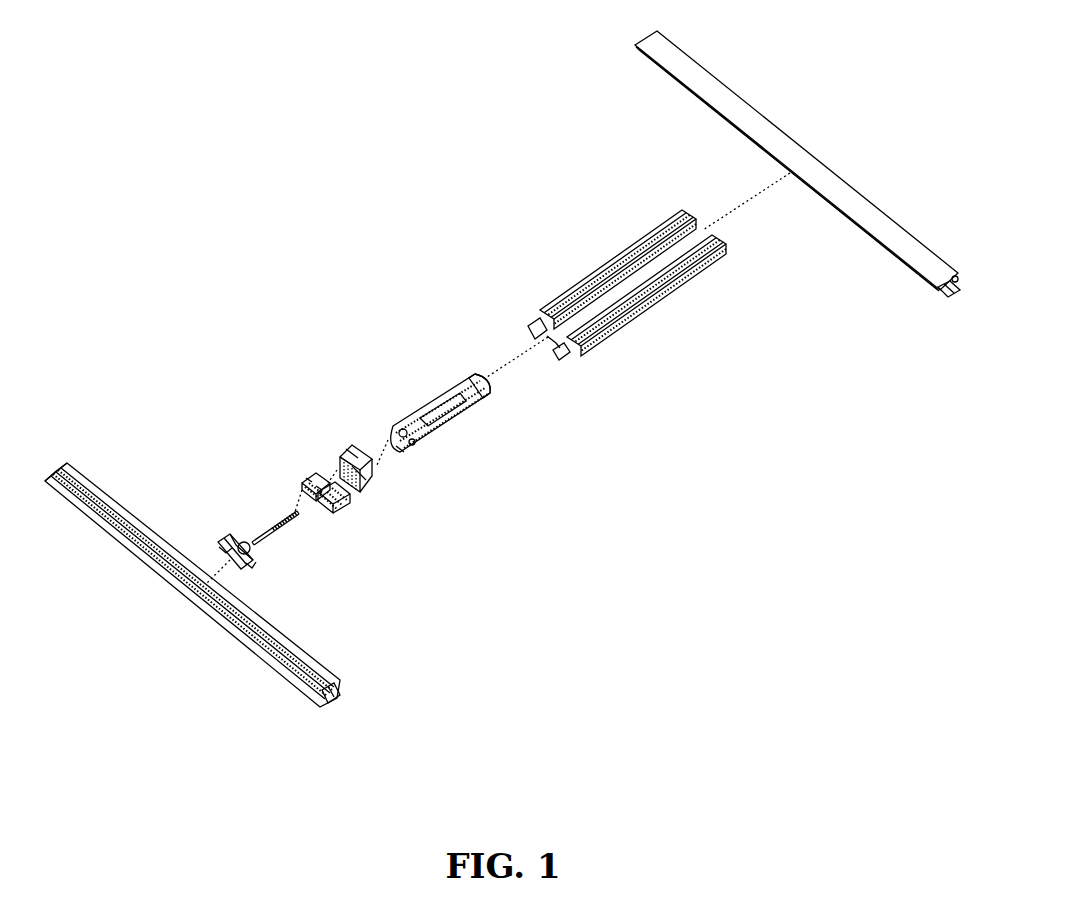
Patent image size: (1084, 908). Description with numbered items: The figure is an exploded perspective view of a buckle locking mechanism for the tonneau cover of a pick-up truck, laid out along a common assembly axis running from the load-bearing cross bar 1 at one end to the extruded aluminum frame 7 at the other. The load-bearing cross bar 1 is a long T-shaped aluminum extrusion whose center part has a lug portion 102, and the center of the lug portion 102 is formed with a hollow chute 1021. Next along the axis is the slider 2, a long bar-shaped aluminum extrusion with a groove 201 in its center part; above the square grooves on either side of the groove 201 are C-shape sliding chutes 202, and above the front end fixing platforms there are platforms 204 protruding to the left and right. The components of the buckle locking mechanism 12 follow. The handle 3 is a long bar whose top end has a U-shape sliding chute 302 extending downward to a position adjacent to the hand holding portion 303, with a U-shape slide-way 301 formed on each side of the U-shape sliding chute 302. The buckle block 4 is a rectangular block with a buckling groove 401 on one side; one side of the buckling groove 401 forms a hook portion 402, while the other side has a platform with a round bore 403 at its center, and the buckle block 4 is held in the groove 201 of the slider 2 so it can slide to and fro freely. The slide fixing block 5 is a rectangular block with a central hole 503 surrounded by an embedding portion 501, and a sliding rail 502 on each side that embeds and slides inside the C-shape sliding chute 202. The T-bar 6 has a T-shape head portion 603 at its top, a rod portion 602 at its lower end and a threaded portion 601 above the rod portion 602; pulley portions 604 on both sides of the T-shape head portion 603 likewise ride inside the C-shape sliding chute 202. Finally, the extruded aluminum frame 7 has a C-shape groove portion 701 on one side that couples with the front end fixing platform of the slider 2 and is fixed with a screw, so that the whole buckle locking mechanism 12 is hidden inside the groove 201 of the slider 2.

The load-bearing cross bar 1 is at (893, 238).
The lug portion 102 is at (945, 294).
The hollow chute 1021 is at (947, 300).
The slider 2 is at (603, 265).
The groove 201 is at (553, 350).
The C-shape sliding chute 202 is at (528, 332).
The platform 204 is at (557, 300).
The handle 3 is at (447, 430).
The U-shape slide-way 301 is at (387, 452).
The U-shape sliding chute 302 is at (397, 455).
The hand holding portion 303 is at (483, 398).
The buckle block 4 is at (375, 480).
The buckling groove 401 is at (365, 487).
The hook portion 402 is at (340, 450).
The round bore 403 is at (340, 457).
The slide fixing block 5 is at (303, 483).
The embedding portion 501 is at (310, 477).
The sliding rail 502 is at (303, 482).
The hole 503 is at (311, 495).
The T-bar 6 is at (227, 540).
The threaded portion 601 is at (272, 532).
The rod portion 602 is at (290, 517).
The T-shape head portion 603 is at (233, 568).
The pulley portion 604 is at (222, 543).
The extruded aluminum frame 7 is at (313, 667).
The C-shape groove portion 701 is at (342, 690).
The buckle locking mechanism 12 is at (253, 570).